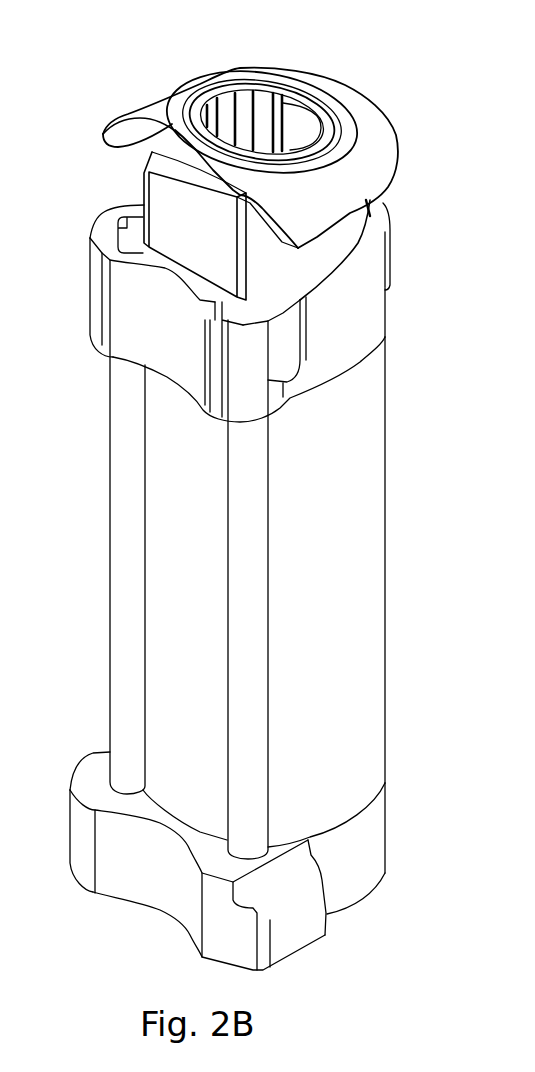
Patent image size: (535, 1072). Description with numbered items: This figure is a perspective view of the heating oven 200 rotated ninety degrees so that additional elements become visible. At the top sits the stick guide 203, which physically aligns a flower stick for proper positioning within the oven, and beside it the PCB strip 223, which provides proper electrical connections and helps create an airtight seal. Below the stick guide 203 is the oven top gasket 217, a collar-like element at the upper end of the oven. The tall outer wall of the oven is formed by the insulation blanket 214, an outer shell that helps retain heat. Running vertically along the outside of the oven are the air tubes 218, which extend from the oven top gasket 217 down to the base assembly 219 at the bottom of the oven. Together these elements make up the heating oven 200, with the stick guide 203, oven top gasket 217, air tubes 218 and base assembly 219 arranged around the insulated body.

The heating oven 200 is at (205, 608).
The stick guide 203 is at (152, 103).
The insulation blanket 214 is at (377, 640).
The oven top gasket 217 is at (98, 285).
The air tubes 218 is at (117, 452).
The base assembly 219 is at (172, 898).
The PCB strip 223 is at (358, 232).